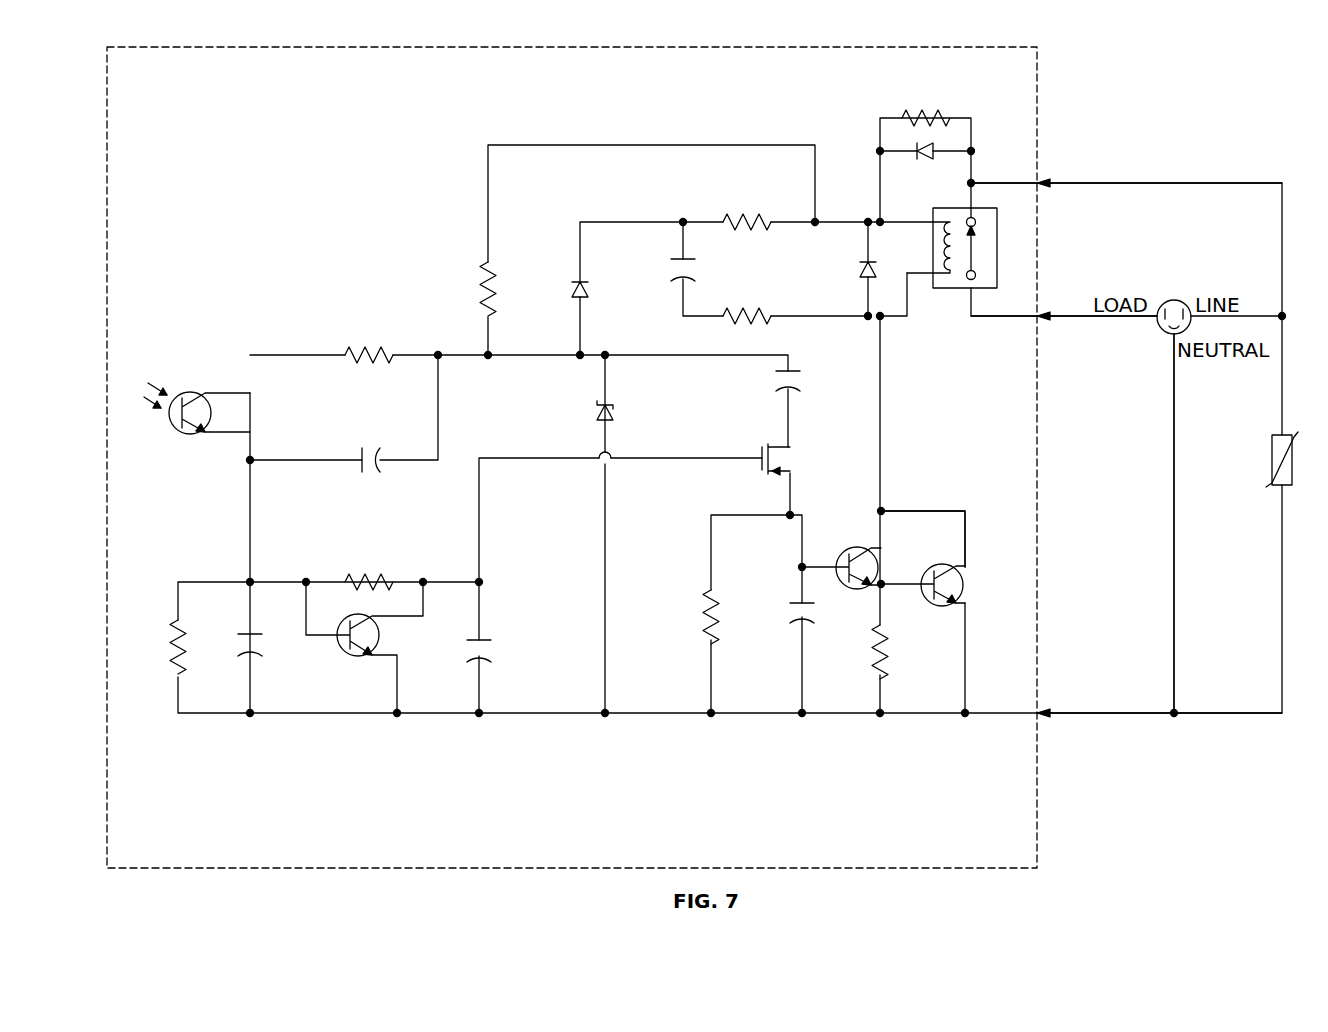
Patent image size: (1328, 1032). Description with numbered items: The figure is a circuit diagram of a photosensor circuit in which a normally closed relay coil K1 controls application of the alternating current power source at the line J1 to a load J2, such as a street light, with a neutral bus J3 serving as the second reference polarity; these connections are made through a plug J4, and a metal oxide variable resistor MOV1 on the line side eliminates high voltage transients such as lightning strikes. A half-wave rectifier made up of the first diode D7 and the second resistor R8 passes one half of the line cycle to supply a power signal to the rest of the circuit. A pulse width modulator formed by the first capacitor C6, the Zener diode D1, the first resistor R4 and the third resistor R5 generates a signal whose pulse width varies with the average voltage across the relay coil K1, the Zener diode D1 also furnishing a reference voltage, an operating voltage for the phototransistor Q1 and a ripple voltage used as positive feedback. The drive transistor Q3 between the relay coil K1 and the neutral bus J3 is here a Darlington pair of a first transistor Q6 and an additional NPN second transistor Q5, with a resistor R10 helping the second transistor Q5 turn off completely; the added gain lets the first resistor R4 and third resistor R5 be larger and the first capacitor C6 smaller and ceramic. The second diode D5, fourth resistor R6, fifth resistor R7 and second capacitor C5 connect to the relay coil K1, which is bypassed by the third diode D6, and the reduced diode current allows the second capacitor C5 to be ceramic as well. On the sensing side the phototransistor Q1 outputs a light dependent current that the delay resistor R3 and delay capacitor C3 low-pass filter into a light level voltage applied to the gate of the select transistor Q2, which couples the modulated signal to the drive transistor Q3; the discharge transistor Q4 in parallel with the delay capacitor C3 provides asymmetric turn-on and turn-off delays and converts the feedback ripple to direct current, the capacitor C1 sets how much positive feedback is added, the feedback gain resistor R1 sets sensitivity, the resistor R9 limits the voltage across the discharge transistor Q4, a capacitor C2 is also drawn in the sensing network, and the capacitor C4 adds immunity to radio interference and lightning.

The phototransistor Q1 is at (197, 408).
The resistor R9 is at (369, 342).
The capacitor C2 is at (373, 442).
The first resistor R4 is at (469, 289).
The second diode D5 is at (561, 290).
The second capacitor C5 is at (666, 270).
The fourth resistor R6 is at (747, 206).
The fifth resistor R7 is at (747, 301).
The Zener diode D1 is at (626, 404).
The first capacitor C6 is at (807, 380).
The select transistor Q2 is at (795, 459).
The delay resistor R3 is at (369, 566).
The discharge transistor Q4 is at (364, 647).
The feedback gain resistor R1 is at (160, 647).
The capacitor C1 is at (266, 647).
The delay capacitor C3 is at (495, 650).
The third resistor R5 is at (728, 617).
The capacitor C4 is at (821, 612).
The first transistor Q6 is at (841, 552).
The second transistor Q5 is at (923, 571).
The drive transistor Q3 is at (967, 521).
The resistor R10 is at (905, 652).
The second resistor R8 is at (926, 103).
The first diode D7 is at (925, 166).
The third diode D6 is at (891, 260).
The relay coil K1 is at (1002, 248).
The line J1 is at (1126, 172).
The load J2 is at (1064, 305).
The neutral bus J3 is at (1159, 700).
The plug J4 is at (1148, 523).
The metal oxide variable resistor MOV1 is at (1260, 447).